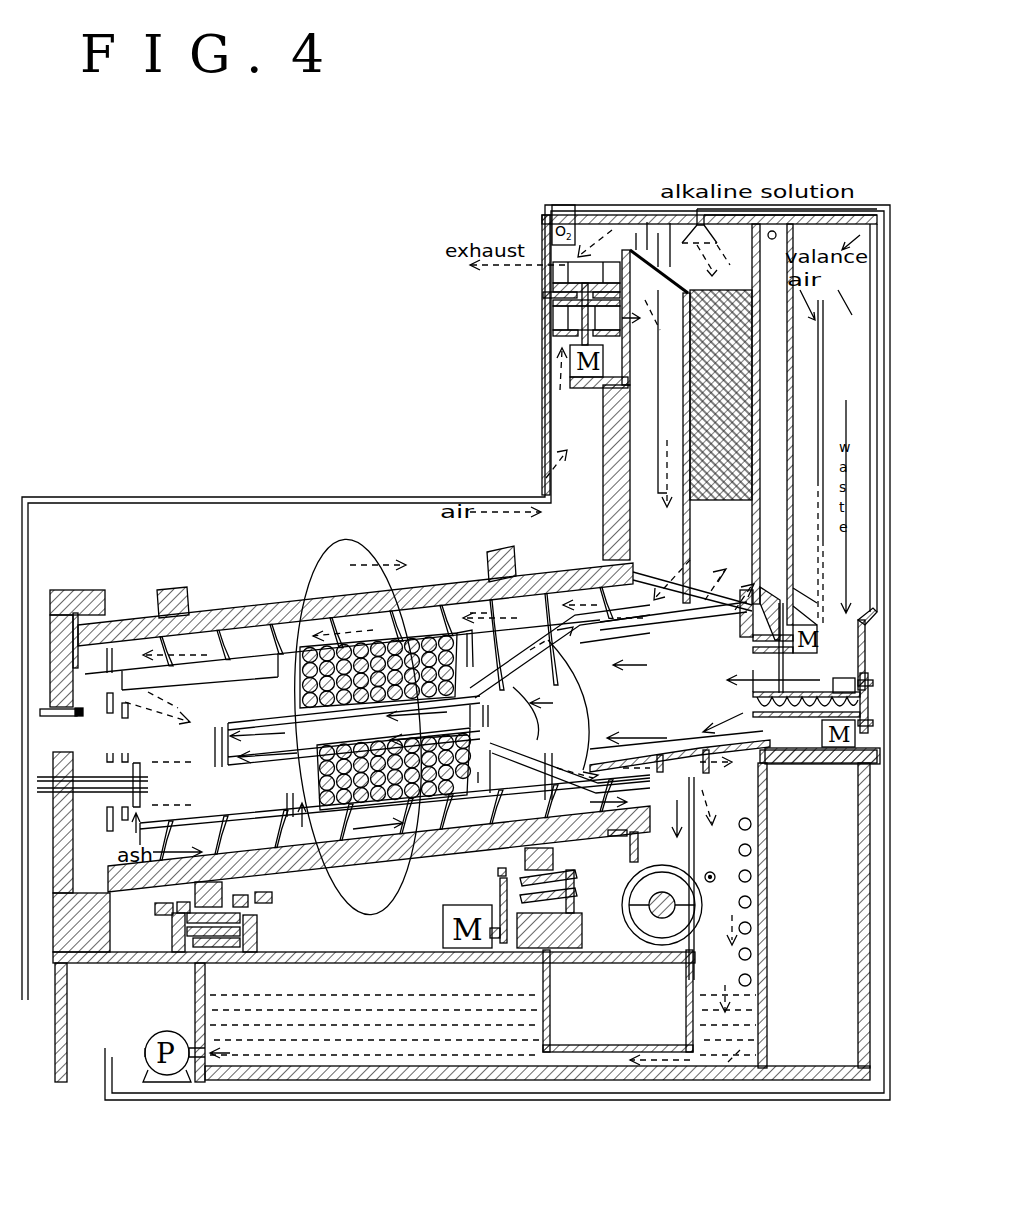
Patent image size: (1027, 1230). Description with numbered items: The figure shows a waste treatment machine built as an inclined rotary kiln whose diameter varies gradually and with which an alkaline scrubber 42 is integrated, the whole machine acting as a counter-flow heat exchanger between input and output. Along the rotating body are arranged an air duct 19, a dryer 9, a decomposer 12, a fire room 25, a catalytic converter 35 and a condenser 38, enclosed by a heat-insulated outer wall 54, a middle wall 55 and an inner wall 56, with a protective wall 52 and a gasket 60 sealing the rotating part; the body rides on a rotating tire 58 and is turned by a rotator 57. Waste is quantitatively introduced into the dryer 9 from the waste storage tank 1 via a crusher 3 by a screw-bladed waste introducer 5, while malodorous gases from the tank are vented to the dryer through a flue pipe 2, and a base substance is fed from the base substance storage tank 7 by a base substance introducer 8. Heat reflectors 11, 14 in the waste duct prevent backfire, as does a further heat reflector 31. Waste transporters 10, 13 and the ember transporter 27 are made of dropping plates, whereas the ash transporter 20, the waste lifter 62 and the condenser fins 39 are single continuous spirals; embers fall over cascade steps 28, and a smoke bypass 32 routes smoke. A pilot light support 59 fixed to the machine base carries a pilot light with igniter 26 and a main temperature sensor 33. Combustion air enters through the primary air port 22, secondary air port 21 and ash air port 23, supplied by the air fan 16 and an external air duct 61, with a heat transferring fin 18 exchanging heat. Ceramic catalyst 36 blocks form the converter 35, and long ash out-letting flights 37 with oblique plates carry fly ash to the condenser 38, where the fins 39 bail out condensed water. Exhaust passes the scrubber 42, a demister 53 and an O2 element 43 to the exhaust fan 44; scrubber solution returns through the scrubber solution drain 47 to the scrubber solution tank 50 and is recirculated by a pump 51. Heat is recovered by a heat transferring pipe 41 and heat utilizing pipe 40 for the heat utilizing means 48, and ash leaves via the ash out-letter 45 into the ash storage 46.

The waste storage tank 1 is at (808, 422).
The flue pipe 2 is at (824, 408).
The crusher 3 is at (845, 686).
The waste introducer 5 is at (752, 707).
The base substance storage tank 7 is at (772, 422).
The base substance introducer 8 is at (752, 642).
The dryer 9 is at (640, 688).
The waste transporter 10 is at (598, 753).
The heat reflector 11 is at (485, 705).
The decomposer 12 is at (344, 731).
The waste transporter 13 is at (388, 740).
The heat reflector 14 is at (218, 755).
The air fan 16 is at (563, 318).
The heat transferring fin 18 is at (668, 388).
The air duct 19 is at (652, 535).
The ash transporter 20 is at (438, 622).
The secondary air port 21 is at (285, 653).
The primary air port 22 is at (90, 672).
The ash air port 23 is at (97, 853).
The fire room 25 is at (175, 737).
The pilot light with igniter 26 is at (175, 782).
The ember transporter 27 is at (290, 813).
The cascade steps/embers dropper 28 is at (240, 830).
The heat reflector 31 is at (118, 737).
The smoke bypass 32 is at (257, 800).
The main temperature sensor 33 is at (62, 717).
The catalytic converter 35 is at (347, 680).
The ceramics/catalyst 36 is at (317, 672).
The ash out-letting flight 37 is at (470, 815).
The condenser 38 is at (528, 656).
The condenser fin 39 is at (520, 790).
The heat utilizing pipe 40 is at (711, 876).
The heat transferring pipe 41 is at (749, 840).
The alkaline scrubber 42 is at (721, 395).
The O2 43 is at (560, 210).
The exhaust fan 44 is at (563, 284).
The ash out-letter 45 is at (662, 905).
The ash storage 46 is at (600, 1000).
The scrubber solution drain 47 is at (722, 790).
The heat utilizing means 48 is at (722, 960).
The scrubber solution tank 50 is at (335, 985).
The pump 51 is at (190, 1023).
The protective wall 52 is at (353, 498).
The demister 53 is at (643, 238).
The outer wall 54 is at (613, 422).
The middle wall 55 is at (302, 652).
The inner wall 56 is at (415, 698).
The rotator 57 is at (455, 880).
The rotating tire 58 is at (505, 562).
The pilot light support 59 is at (65, 604).
The gasket 60 is at (608, 561).
The external air duct 61 is at (570, 458).
The waste lifter 62 is at (542, 740).